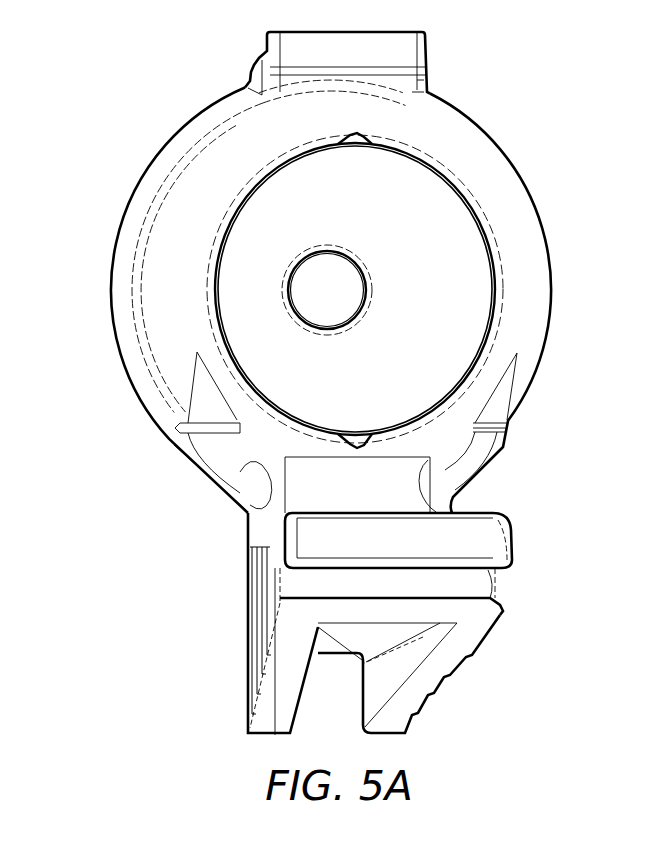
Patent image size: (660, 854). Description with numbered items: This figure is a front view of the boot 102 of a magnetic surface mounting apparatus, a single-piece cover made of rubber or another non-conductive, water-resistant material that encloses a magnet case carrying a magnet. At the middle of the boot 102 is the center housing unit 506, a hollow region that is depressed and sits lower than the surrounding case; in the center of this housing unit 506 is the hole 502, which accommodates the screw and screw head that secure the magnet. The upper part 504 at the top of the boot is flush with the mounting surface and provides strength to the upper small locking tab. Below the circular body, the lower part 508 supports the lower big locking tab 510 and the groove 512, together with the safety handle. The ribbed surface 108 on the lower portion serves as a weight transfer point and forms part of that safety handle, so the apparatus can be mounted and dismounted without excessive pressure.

The boot 102 is at (527, 212).
The ribbed surface 108 is at (443, 683).
The hole 502 is at (357, 287).
The upper part 504 is at (410, 48).
The center housing unit 506 is at (247, 237).
The lower part 508 is at (453, 438).
The lower big locking tab 510 is at (491, 524).
The groove 512 is at (477, 583).